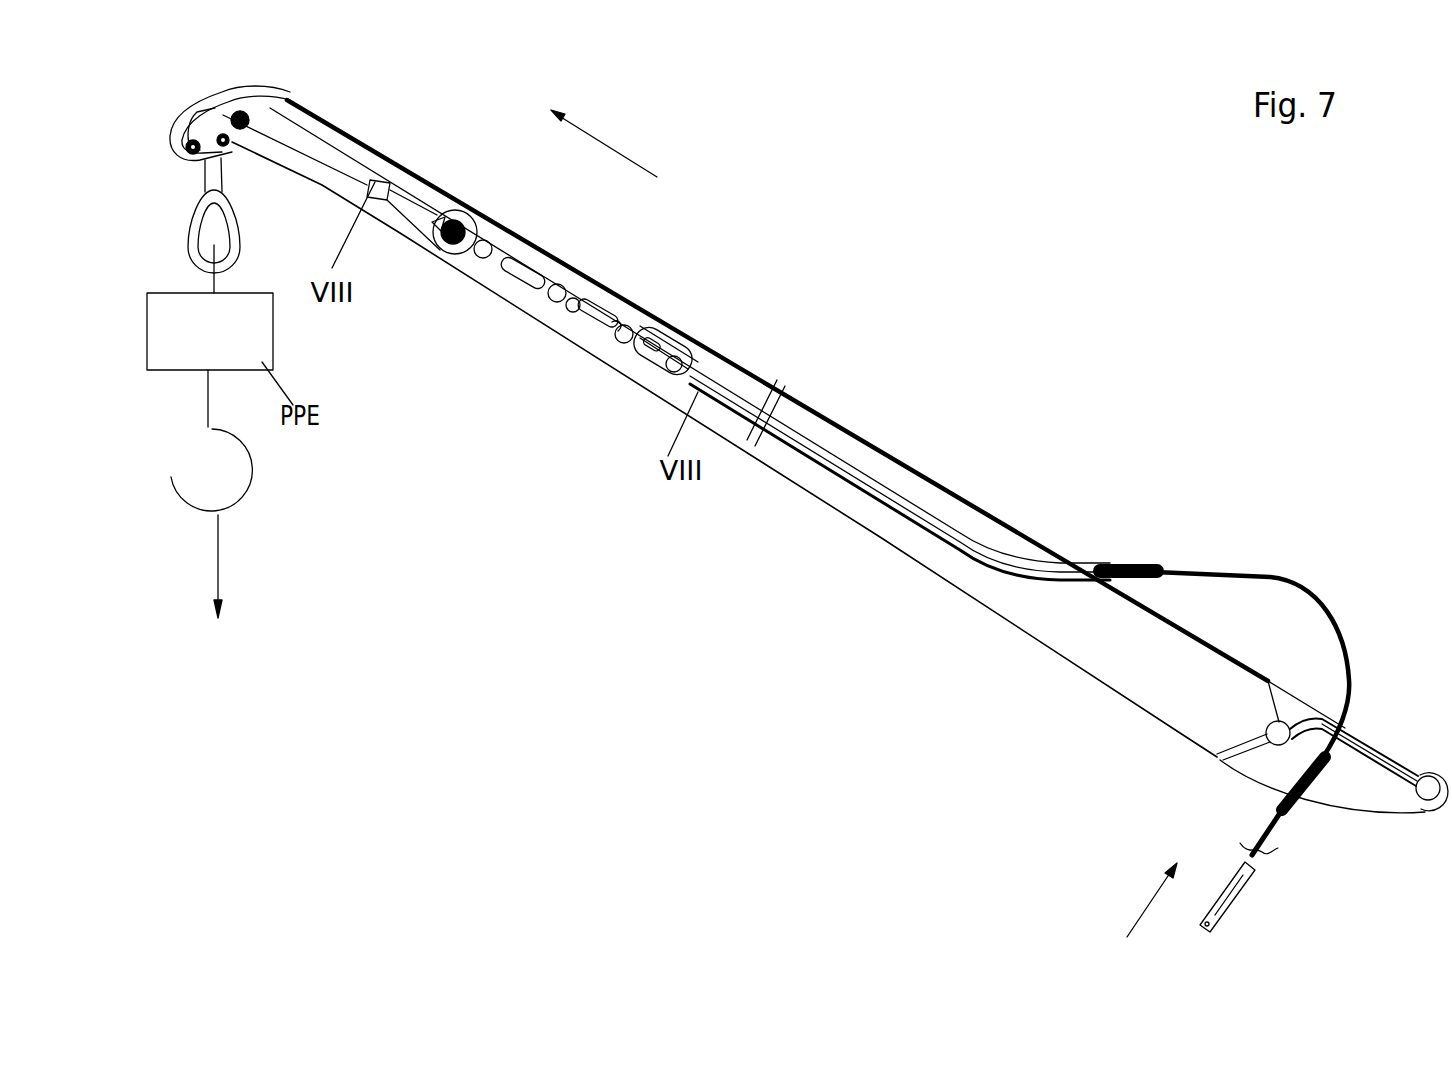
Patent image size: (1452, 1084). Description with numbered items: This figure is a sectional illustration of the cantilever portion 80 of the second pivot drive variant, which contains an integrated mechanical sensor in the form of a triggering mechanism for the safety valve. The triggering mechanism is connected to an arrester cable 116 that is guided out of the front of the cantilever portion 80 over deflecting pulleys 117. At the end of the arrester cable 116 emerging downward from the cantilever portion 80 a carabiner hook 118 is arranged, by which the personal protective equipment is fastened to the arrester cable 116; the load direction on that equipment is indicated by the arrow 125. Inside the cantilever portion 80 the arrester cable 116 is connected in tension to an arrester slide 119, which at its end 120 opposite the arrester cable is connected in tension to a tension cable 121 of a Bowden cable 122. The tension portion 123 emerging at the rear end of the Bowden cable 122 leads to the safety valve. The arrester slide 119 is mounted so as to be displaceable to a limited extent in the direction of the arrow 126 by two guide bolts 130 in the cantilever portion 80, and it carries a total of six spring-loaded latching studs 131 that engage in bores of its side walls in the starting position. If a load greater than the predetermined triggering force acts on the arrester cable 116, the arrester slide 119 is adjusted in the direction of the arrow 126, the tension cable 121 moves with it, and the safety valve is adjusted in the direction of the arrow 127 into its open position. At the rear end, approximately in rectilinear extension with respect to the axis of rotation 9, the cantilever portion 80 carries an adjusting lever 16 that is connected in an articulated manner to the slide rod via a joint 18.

The cantilever portion 80 is at (971, 624).
The arrester cable 116 is at (320, 148).
The deflecting pulleys 117 is at (226, 150).
The carabiner hook 118 is at (195, 238).
The arrester slide 119 is at (687, 332).
The end 120 is at (638, 362).
The tension cable 121 is at (756, 398).
The Bowden cable 122 is at (1230, 568).
The tension portion 123 is at (1245, 903).
The load direction arrow 125 is at (220, 566).
The arrow 126 is at (623, 153).
The arrow 127 is at (1147, 908).
The guide bolts 130 is at (507, 260).
The latching studs 131 is at (488, 238).
The axis of rotation 9 is at (1279, 737).
The adjusting lever 16 is at (1337, 790).
The joint 18 is at (1430, 780).